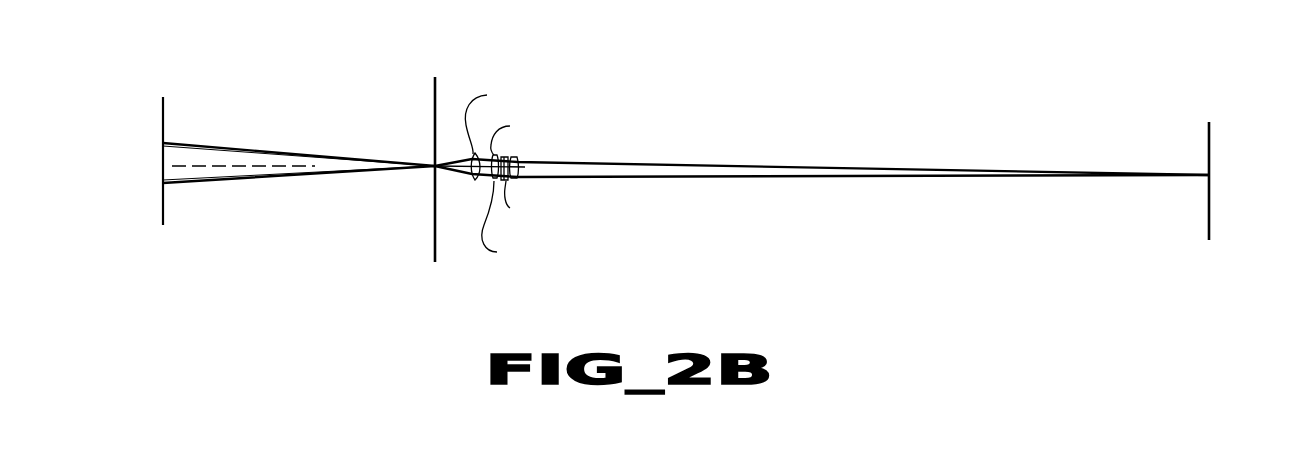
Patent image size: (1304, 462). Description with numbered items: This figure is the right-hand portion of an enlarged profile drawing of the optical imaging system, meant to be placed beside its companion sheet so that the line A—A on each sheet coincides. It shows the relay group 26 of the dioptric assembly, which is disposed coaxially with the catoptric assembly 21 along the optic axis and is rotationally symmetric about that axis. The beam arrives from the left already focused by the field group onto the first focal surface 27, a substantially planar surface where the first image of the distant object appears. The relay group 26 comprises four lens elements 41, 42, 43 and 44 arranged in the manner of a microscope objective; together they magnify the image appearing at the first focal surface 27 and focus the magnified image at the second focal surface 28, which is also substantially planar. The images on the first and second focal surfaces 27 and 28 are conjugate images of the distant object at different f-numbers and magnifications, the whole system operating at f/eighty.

The catoptric assembly 21 is at (197, 128).
The relay group 26 is at (532, 280).
The first focal surface 27 is at (435, 98).
The second focal surface 28 is at (1207, 143).
The lens element 41 is at (473, 180).
The lens element 42 is at (494, 181).
The lens element 43 is at (503, 155).
The lens element 44 is at (518, 178).